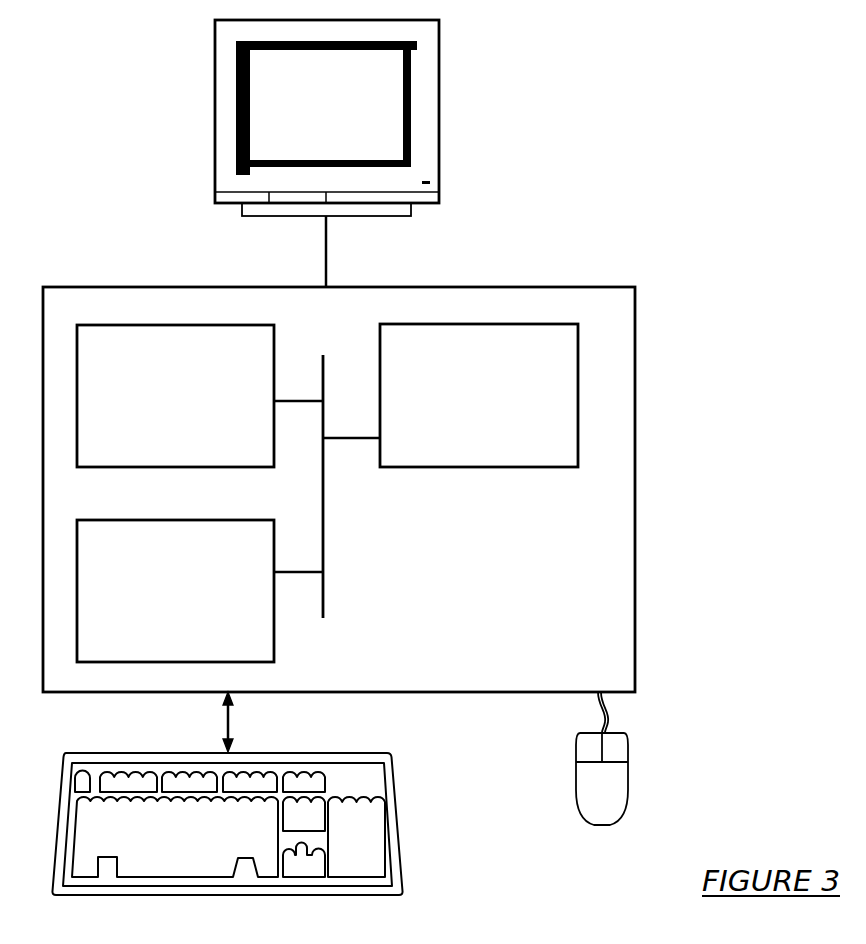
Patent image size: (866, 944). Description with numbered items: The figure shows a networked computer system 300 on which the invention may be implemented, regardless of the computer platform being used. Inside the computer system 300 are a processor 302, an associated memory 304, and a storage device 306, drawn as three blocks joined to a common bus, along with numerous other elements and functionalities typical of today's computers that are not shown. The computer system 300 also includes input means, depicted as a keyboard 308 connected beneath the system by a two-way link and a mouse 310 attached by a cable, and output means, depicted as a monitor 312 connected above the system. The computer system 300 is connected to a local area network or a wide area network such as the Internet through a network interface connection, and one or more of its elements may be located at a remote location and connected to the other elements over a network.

The networked computer system 300 is at (644, 484).
The processor 302 is at (513, 407).
The memory 304 is at (195, 407).
The storage device 306 is at (192, 602).
The keyboard 308 is at (187, 859).
The mouse 310 is at (620, 799).
The monitor 312 is at (343, 123).